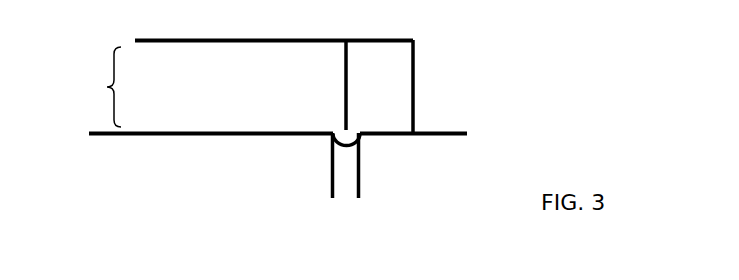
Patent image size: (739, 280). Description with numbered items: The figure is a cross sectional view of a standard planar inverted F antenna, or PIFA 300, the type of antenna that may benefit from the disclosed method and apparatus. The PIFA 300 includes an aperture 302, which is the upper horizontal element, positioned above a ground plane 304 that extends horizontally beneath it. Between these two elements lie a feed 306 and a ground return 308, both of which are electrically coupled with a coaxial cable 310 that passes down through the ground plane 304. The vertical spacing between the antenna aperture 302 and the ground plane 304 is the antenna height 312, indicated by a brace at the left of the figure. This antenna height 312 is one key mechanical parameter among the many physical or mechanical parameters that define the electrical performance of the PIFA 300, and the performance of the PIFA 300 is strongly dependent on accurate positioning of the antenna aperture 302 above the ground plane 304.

The planar inverted F antenna 300 is at (167, 187).
The aperture 302 is at (307, 38).
The ground plane 304 is at (219, 135).
The feed 306 is at (348, 97).
The ground return 308 is at (415, 72).
The coaxial cable 310 is at (360, 190).
The antenna height 312 is at (87, 87).